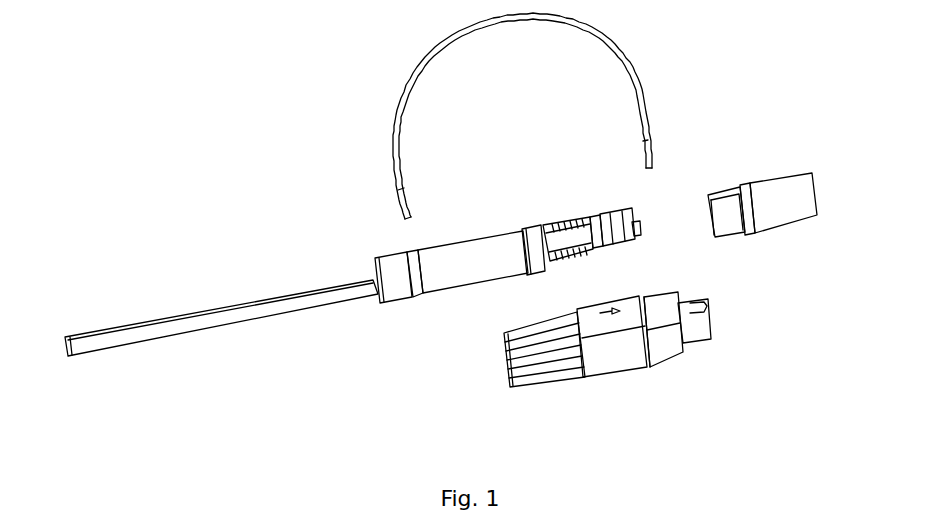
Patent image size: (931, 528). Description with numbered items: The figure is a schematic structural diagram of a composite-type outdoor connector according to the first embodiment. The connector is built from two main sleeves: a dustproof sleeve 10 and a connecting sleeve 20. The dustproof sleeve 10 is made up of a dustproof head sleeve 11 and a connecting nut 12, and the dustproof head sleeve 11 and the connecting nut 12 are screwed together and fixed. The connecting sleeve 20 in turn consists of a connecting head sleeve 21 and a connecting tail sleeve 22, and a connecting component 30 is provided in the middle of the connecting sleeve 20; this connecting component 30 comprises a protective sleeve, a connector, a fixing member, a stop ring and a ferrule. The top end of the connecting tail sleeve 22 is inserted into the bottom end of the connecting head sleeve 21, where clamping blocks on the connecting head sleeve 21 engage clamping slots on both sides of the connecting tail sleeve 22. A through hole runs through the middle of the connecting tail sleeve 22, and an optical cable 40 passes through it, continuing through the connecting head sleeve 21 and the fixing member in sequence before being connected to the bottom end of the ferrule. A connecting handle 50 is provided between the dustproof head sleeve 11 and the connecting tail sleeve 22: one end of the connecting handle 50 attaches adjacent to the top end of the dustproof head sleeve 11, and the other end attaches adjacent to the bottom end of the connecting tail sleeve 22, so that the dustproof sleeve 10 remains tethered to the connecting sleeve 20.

The dustproof sleeve 10 is at (631, 375).
The dustproof head sleeve 11 is at (668, 333).
The connecting nut 12 is at (575, 362).
The connecting sleeve 20 is at (589, 174).
The connecting head sleeve 21 is at (740, 203).
The connecting tail sleeve 22 is at (493, 245).
The connecting component 30 is at (600, 237).
The optical cable 40 is at (307, 298).
The connecting handle 50 is at (433, 55).